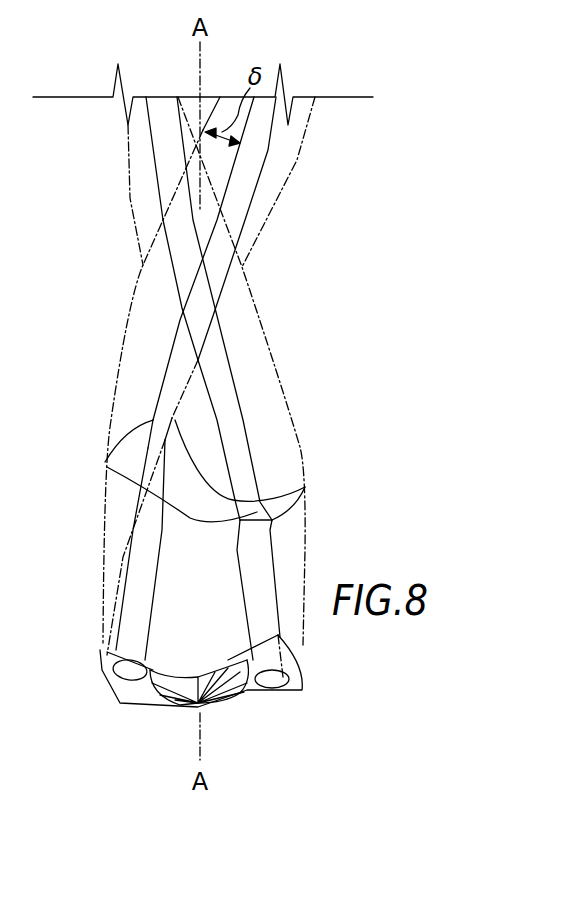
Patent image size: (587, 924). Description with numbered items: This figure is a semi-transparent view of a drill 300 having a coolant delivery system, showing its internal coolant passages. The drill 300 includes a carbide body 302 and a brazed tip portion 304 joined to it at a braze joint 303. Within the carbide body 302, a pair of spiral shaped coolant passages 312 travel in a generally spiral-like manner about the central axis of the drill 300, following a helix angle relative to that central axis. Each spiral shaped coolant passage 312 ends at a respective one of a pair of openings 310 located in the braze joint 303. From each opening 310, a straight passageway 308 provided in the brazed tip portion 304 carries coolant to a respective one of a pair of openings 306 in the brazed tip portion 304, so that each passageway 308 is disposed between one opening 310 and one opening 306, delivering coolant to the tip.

The drill 300 is at (96, 42).
The carbide body 302 is at (148, 308).
The braze joint 303 is at (107, 460).
The brazed tip portion 304 is at (297, 533).
The openings 306 is at (97, 660).
The straight passageways 308 is at (247, 537).
The openings 310 is at (153, 420).
The spiral shaped coolant passage 312 is at (163, 175).